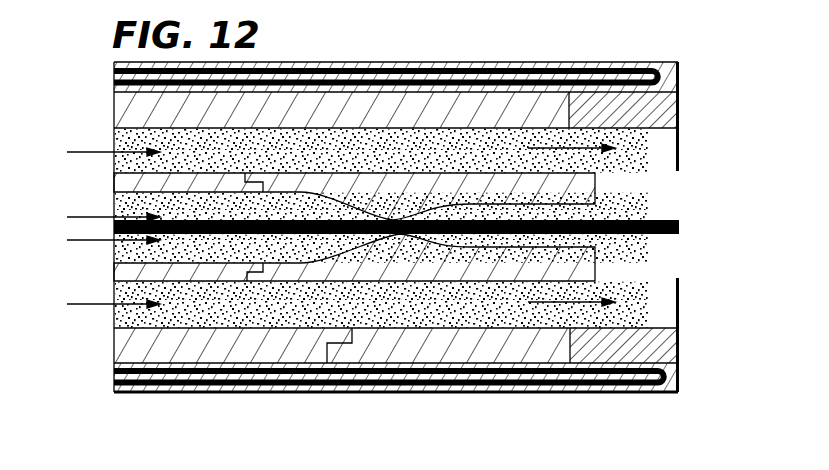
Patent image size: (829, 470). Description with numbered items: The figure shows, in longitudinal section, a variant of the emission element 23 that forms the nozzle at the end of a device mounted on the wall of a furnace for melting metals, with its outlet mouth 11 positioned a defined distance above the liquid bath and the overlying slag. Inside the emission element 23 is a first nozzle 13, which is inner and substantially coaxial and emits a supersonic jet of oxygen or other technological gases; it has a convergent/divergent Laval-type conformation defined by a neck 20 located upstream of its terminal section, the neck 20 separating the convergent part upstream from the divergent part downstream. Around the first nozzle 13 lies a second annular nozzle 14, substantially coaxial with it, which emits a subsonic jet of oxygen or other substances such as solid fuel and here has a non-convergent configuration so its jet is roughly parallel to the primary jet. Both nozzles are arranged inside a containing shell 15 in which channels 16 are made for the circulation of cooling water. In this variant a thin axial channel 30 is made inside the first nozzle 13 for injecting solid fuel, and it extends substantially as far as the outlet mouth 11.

The outlet mouth 11 is at (665, 255).
The first nozzle 13 is at (328, 182).
The second annular nozzle 14 is at (422, 105).
The containing shell 15 is at (362, 68).
The channels 16 is at (297, 63).
The neck 20 is at (397, 237).
The emission element 23 is at (506, 45).
The thin axial channel 30 is at (657, 219).